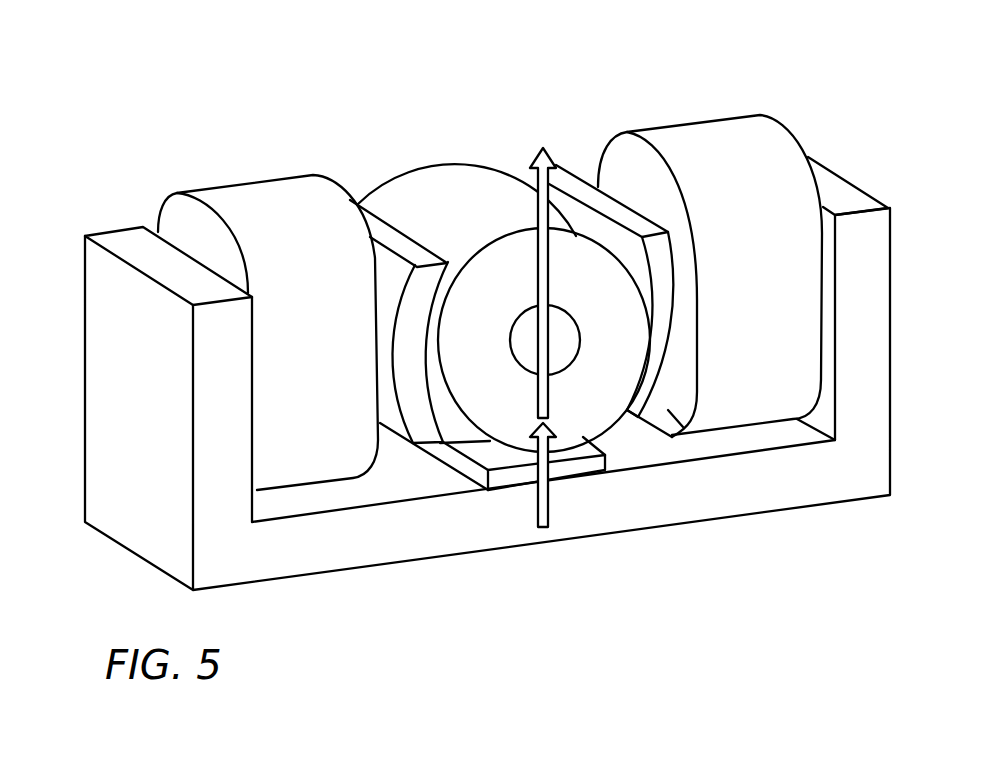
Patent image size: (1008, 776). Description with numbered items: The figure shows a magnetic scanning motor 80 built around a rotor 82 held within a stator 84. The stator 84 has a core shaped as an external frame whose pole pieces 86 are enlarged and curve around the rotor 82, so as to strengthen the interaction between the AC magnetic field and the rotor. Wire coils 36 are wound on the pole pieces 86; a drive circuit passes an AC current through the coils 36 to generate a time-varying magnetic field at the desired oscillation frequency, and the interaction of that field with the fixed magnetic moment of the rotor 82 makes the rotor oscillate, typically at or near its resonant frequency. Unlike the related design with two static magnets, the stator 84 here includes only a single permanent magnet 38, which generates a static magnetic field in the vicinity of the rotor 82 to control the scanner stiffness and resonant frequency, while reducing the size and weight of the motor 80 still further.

The magnetic scanning motor 80 is at (813, 72).
The stator 84 is at (861, 188).
The wire coils 36 is at (664, 127).
The pole pieces 86 is at (398, 230).
The rotor 82 is at (452, 160).
The permanent magnet 38 is at (572, 468).